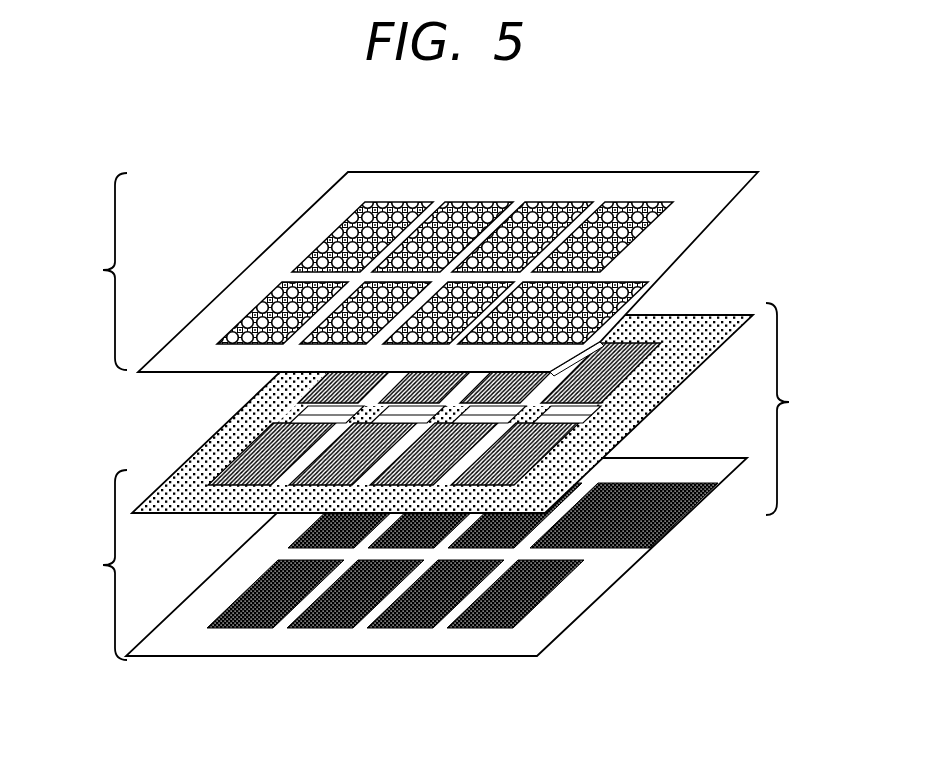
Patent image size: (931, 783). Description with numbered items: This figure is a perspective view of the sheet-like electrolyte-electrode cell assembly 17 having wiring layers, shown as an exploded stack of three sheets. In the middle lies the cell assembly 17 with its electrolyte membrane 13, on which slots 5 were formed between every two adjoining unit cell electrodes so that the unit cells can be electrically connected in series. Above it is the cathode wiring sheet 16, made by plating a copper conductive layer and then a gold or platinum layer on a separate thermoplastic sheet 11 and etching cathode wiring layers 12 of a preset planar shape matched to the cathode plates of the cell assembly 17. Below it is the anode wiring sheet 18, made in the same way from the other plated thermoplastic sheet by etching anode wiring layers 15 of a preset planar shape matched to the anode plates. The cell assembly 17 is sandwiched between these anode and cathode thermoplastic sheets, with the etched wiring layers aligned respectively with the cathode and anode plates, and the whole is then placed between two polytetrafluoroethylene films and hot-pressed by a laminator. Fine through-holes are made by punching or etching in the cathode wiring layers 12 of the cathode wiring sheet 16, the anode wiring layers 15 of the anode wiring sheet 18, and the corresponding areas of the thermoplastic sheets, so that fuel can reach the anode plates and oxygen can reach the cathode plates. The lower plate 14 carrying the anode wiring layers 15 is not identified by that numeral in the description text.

The slot 5 is at (590, 343).
The thermoplastic sheet 11 is at (707, 195).
The cathode wiring layer 12 is at (638, 212).
The electrolyte membrane 13 is at (707, 330).
The rear substrate 14 is at (572, 612).
The anode wiring layer 15 is at (675, 522).
The cathode wiring sheet 16 is at (99, 271).
The sheet-like electrolyte-electrode cell assembly 17 is at (794, 409).
The anode wiring sheet 18 is at (99, 565).